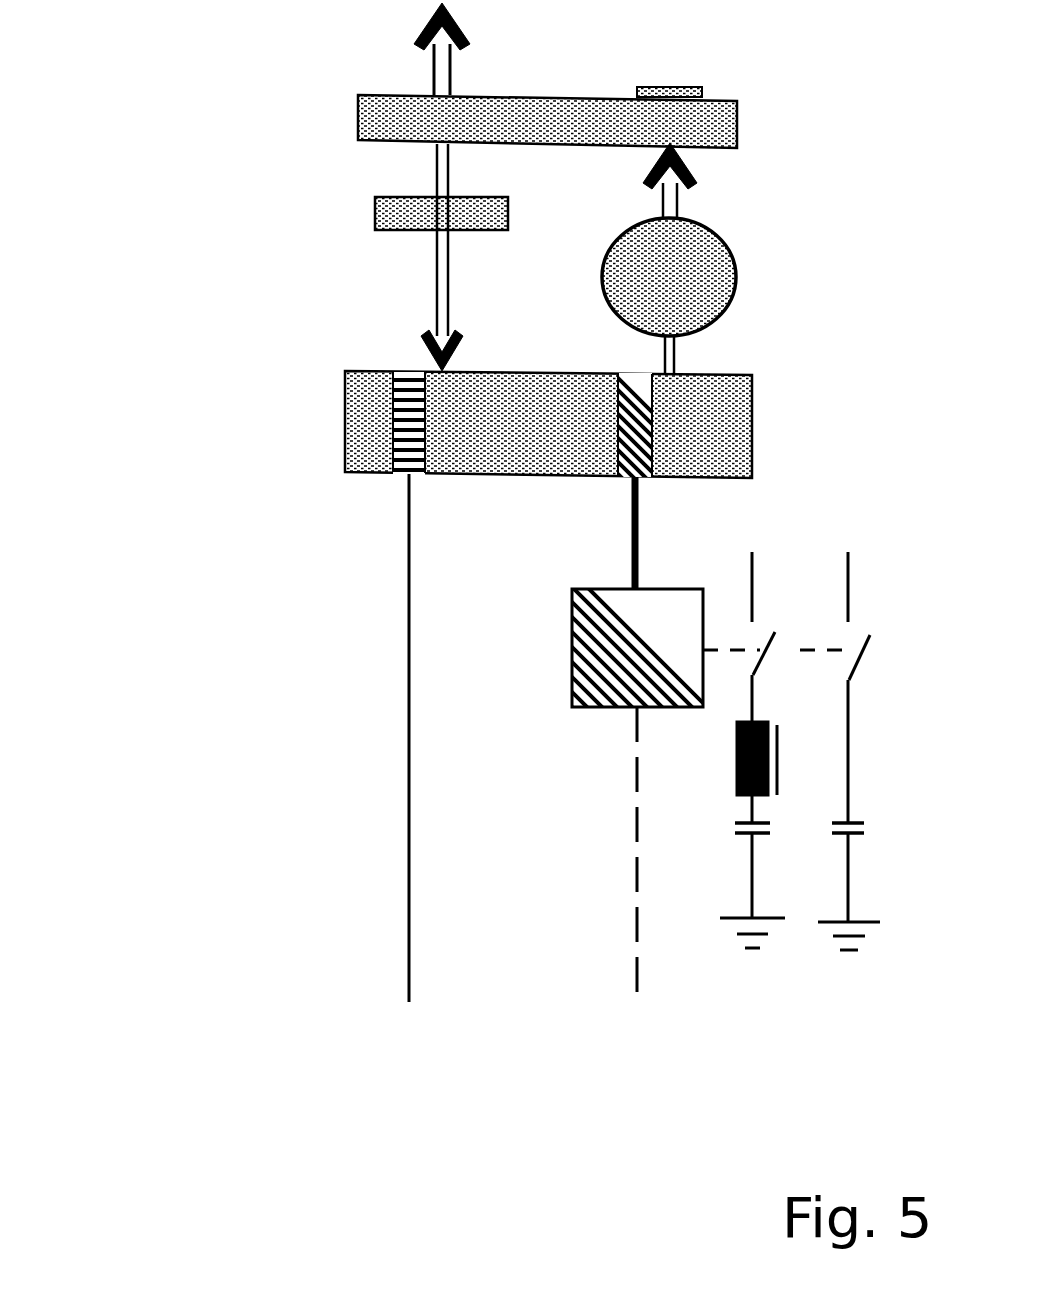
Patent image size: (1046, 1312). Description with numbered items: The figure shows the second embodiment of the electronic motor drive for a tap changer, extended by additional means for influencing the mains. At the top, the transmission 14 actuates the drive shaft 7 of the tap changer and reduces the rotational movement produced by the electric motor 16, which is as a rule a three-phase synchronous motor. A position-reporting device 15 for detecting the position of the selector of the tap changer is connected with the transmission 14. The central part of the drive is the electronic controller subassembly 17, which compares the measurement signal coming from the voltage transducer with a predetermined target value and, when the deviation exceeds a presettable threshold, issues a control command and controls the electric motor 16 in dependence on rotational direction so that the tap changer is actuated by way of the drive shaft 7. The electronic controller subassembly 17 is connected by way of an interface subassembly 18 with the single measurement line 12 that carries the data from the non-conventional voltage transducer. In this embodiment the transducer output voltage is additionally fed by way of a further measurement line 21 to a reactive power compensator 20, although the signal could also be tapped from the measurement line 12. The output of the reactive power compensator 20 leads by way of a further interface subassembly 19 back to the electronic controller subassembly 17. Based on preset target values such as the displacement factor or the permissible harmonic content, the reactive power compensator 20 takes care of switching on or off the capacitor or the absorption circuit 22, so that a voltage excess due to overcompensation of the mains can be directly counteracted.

The drive shaft 7 is at (418, 37).
The measurement line 12 is at (408, 875).
The transmission 14 is at (358, 118).
The position-reporting device 15 is at (375, 209).
The electric motor 16 is at (603, 288).
The electronic controller subassembly 17 is at (408, 522).
The interface subassembly 18 is at (247, 478).
The further interface subassembly 19 is at (630, 453).
The reactive power compensator 20 is at (602, 663).
The further measurement line 21 is at (635, 837).
The absorption circuit 22 is at (752, 853).